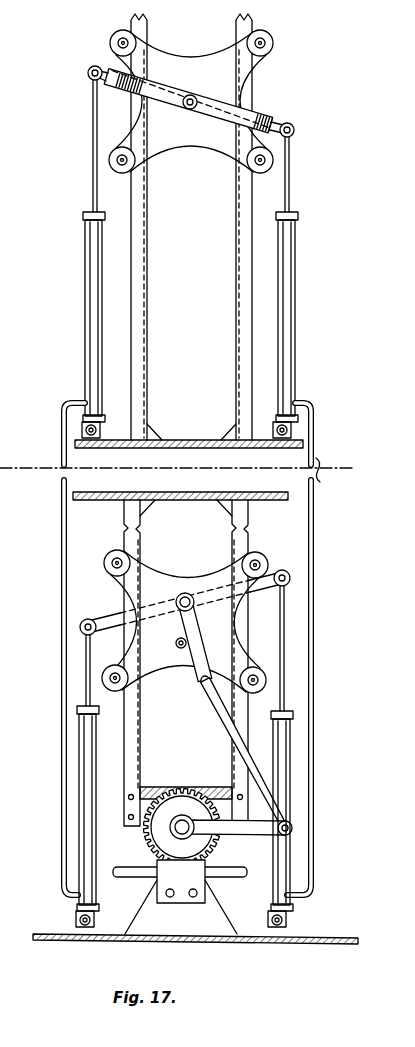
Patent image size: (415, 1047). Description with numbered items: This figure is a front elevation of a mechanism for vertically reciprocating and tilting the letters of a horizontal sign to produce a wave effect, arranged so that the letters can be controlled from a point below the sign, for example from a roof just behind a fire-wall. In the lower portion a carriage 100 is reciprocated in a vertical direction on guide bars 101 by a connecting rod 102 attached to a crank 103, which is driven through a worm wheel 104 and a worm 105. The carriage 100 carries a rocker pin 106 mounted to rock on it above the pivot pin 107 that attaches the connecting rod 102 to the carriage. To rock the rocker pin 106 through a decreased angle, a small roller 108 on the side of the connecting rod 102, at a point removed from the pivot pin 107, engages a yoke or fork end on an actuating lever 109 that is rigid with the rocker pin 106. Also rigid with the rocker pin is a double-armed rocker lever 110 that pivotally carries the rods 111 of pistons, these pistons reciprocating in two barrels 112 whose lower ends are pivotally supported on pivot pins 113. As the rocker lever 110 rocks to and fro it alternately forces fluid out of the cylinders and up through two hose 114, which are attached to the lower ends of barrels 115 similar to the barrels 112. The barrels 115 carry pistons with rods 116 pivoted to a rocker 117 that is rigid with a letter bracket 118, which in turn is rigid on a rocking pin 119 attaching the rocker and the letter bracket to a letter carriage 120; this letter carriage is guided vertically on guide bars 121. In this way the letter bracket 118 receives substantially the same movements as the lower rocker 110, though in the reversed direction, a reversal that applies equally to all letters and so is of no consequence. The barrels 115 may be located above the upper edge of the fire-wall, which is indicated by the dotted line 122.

The carriage 100 is at (157, 668).
The guide bars 101 is at (134, 748).
The connecting rod 102 is at (215, 712).
The crank 103 is at (260, 835).
The worm wheel 104 is at (148, 854).
The worm 105 is at (157, 880).
The rocker pin 106 is at (186, 593).
The pivot pin 107 is at (176, 643).
The small roller 108 is at (207, 676).
The actuating lever 109 is at (200, 633).
The double-armed rocker lever 110 is at (105, 618).
The piston rods 111 is at (85, 662).
The barrels 112 is at (80, 802).
The pivot pins 113 is at (78, 921).
The hose 114 is at (62, 550).
The barrels 115 is at (86, 318).
The piston rods 116 is at (92, 180).
The rocker 117 is at (291, 118).
The letter bracket 118 is at (250, 113).
The rocking pin 119 is at (194, 98).
The letter carriage 120 is at (196, 62).
The guide bars 121 is at (138, 288).
The dotted line 122 is at (340, 465).